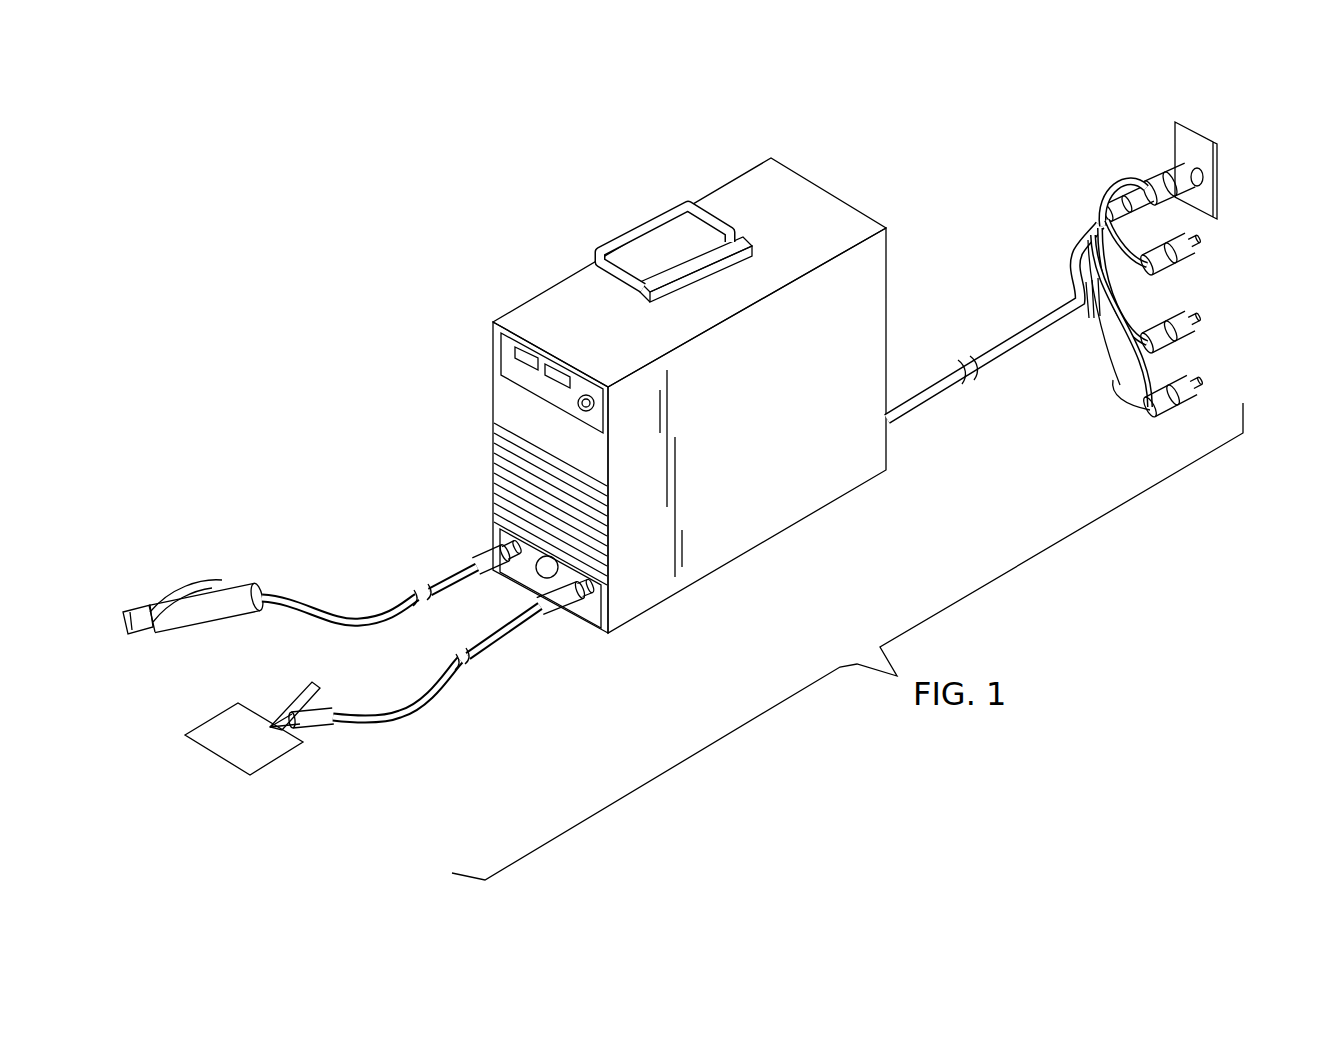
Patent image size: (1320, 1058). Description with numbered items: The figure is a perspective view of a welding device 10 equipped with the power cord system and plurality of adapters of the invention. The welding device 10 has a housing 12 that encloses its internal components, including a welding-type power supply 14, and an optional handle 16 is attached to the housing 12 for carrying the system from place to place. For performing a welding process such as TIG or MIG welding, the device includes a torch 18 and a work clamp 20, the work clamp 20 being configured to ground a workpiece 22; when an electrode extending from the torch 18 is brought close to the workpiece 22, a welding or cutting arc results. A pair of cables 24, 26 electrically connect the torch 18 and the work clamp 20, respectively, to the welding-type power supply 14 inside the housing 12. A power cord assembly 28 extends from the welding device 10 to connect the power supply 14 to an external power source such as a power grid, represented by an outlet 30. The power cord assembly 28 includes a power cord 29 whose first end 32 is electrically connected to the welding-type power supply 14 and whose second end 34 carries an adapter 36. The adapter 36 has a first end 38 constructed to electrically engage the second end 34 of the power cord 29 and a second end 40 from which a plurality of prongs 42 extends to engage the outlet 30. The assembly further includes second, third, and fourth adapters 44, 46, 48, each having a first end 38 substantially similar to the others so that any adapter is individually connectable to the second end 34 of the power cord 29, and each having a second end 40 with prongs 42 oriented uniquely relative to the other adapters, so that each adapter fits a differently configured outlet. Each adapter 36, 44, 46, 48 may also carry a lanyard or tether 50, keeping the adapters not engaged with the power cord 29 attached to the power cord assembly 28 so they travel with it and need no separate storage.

The welding device 10 is at (474, 130).
The housing 12 is at (697, 371).
The welding-type power supply 14 is at (870, 168).
The handle 16 is at (662, 208).
The torch 18 is at (240, 598).
The work clamp 20 is at (310, 688).
The workpiece 22 is at (224, 745).
The cable 24 is at (332, 610).
The cable 26 is at (412, 710).
The power cord assembly 28 is at (958, 210).
The power cord 29 is at (1010, 340).
The outlet 30 is at (1190, 134).
The first end 32 is at (905, 445).
The second end 34 is at (1070, 200).
The adapter 36 is at (1152, 170).
The first end 38 is at (1200, 193).
The second end 40 is at (1168, 166).
The prongs 42 is at (1224, 146).
The second adapter 44 is at (1210, 228).
The third adapter 46 is at (1222, 321).
The fourth adapter 48 is at (1222, 378).
The tether 50 is at (1118, 186).